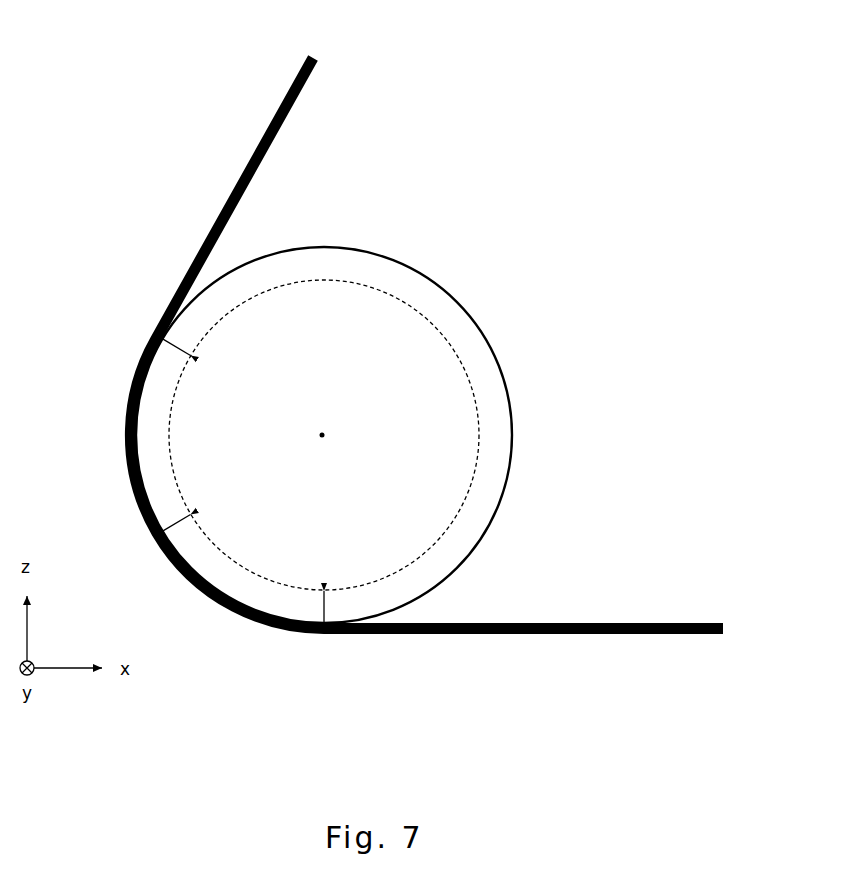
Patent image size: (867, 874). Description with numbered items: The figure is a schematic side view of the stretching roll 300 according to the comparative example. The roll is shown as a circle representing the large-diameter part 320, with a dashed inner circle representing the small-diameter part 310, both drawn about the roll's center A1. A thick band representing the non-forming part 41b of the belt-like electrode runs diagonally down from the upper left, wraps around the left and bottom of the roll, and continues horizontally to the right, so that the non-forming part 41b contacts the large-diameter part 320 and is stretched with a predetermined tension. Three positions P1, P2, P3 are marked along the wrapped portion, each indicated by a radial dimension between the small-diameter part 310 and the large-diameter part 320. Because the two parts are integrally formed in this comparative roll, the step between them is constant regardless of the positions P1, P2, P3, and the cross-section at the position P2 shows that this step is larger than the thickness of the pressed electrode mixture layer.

The non-forming part 41b is at (297, 75).
The stretching roll 300 is at (370, 413).
The small-diameter part 310 is at (472, 391).
The large-diameter part 320 is at (509, 479).
The axis center of roller A1 is at (323, 436).
The position P1 is at (191, 359).
The position P2 is at (192, 516).
The position P3 is at (324, 595).